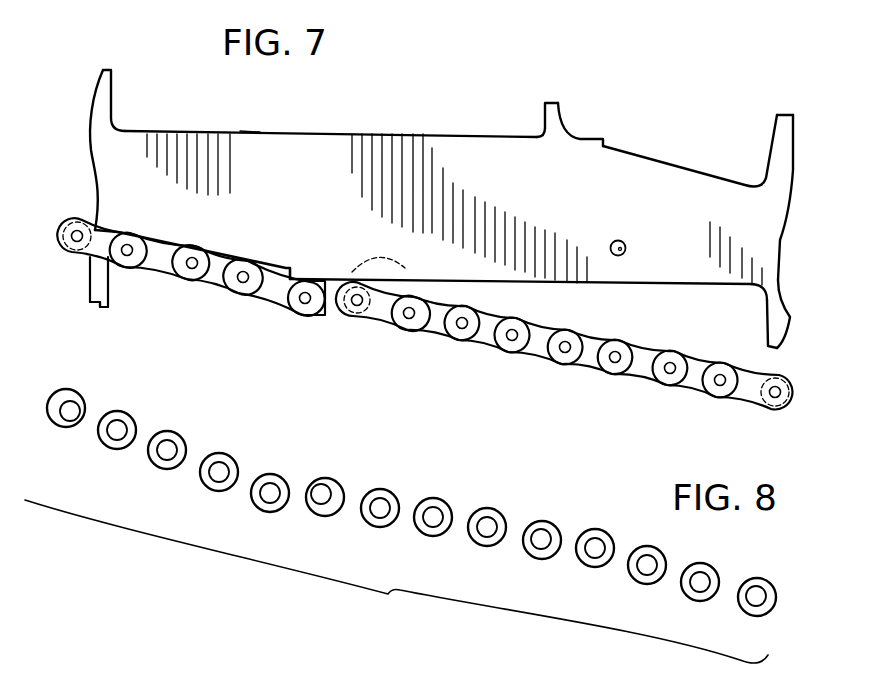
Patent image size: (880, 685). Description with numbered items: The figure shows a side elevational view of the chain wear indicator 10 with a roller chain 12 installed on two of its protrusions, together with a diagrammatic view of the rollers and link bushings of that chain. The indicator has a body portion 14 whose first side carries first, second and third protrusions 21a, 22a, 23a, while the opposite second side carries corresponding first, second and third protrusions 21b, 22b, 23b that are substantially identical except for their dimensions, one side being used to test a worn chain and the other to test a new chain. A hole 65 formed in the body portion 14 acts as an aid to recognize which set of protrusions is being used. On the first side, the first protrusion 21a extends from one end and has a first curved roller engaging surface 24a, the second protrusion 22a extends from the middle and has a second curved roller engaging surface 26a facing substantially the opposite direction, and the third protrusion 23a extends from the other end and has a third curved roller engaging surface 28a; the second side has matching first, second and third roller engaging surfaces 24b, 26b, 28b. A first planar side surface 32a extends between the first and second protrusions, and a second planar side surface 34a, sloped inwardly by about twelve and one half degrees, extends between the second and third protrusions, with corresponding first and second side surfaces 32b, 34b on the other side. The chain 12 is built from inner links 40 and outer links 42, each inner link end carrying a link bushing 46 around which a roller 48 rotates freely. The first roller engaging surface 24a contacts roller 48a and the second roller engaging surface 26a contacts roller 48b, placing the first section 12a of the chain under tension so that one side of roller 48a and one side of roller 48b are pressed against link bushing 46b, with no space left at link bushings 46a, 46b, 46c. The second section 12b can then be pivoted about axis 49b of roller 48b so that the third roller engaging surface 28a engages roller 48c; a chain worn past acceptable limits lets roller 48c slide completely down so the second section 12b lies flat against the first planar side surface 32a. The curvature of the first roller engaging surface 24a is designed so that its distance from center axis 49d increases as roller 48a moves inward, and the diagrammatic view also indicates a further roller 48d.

In FIG. 7, the chain wear indicator 10 is at (522, 75).
In FIG. 7, the chain 12 is at (532, 368).
In FIG. 8, the chain 12 is at (450, 552).
In FIG. 7, the first section of chain 12a is at (194, 292).
In FIG. 8, the first section of chain 12a is at (174, 486).
In FIG. 7, the second section of chain 12b is at (441, 343).
In FIG. 8, the second section of chain 12b is at (570, 577).
In FIG. 7, the body portion 14 is at (323, 168).
In FIG. 7, the first protrusion 21a is at (106, 308).
In FIG. 7, the first protrusion 21b is at (780, 108).
In FIG. 7, the second protrusion 22a is at (338, 318).
In FIG. 7, the second protrusion 22b is at (558, 93).
In FIG. 7, the third protrusion 23a is at (764, 354).
In FIG. 7, the third protrusion 23b is at (113, 58).
In FIG. 7, the first curved roller engaging surface 24a is at (90, 270).
In FIG. 7, the first curved roller engaging surface 24b is at (795, 128).
In FIG. 7, the second curved roller engaging surface 26a is at (354, 270).
In FIG. 7, the second curved roller engaging surface 26b is at (534, 122).
In FIG. 7, the third curved roller engaging surface 28a is at (790, 318).
In FIG. 7, the third curved roller engaging surface 28b is at (90, 97).
In FIG. 7, the first planar side surface 32a is at (697, 292).
In FIG. 7, the first planar side surface 32b is at (248, 142).
In FIG. 7, the second planar side surface 34a is at (160, 233).
In FIG. 7, the second planar side surface 34b is at (690, 168).
In FIG. 7, the inner links 40 is at (587, 363).
In FIG. 7, the outer links 42 is at (640, 377).
In FIG. 8, the link bushing 46 is at (553, 532).
In FIG. 8, the link bushing 46a is at (66, 405).
In FIG. 8, the link bushing 46b is at (323, 485).
In FIG. 8, the link bushing 46c is at (755, 588).
In FIG. 8, the roller 48 is at (552, 523).
In FIG. 7, the roller 48a is at (80, 220).
In FIG. 8, the roller 48a is at (74, 395).
In FIG. 7, the roller 48b is at (403, 262).
In FIG. 8, the roller 48b is at (337, 487).
In FIG. 7, the roller 48c is at (765, 403).
In FIG. 8, the roller 48c is at (768, 612).
In FIG. 8, the fourth bushing 48d is at (273, 478).
In FIG. 7, the axis of roller 48b 49b is at (359, 306).
In FIG. 7, the center axis 49d is at (306, 292).
In FIG. 7, the hole 65 is at (626, 246).